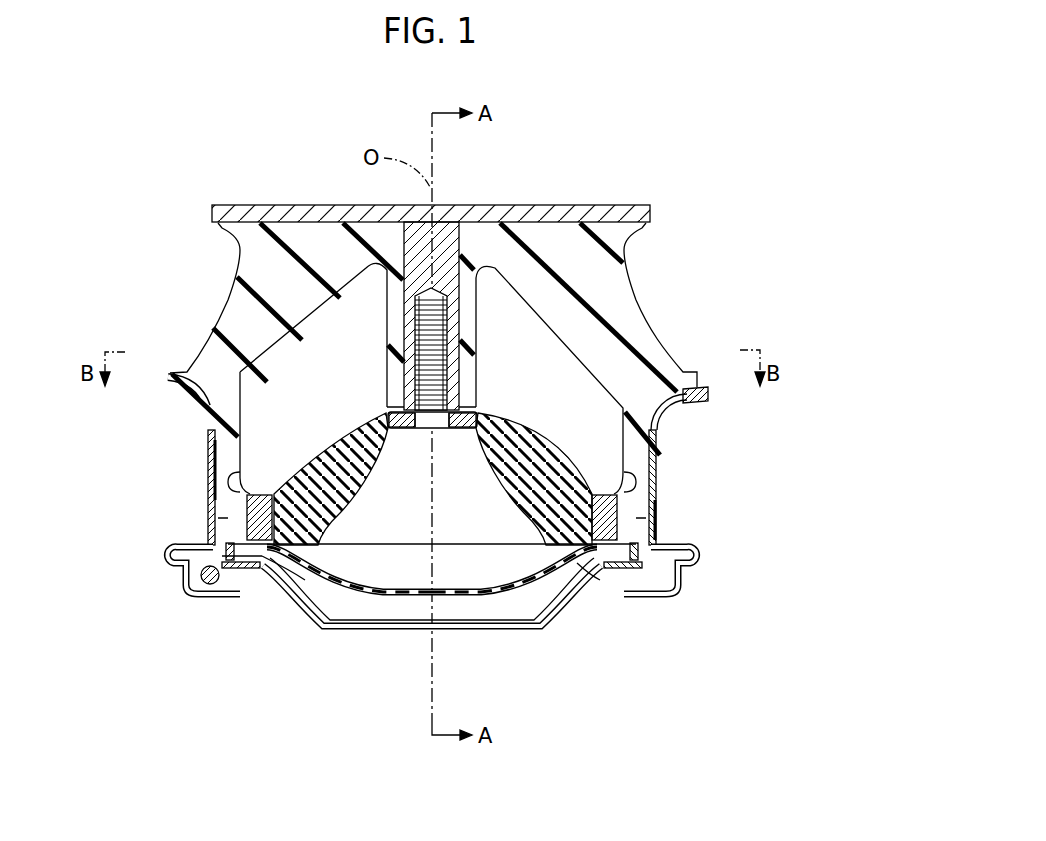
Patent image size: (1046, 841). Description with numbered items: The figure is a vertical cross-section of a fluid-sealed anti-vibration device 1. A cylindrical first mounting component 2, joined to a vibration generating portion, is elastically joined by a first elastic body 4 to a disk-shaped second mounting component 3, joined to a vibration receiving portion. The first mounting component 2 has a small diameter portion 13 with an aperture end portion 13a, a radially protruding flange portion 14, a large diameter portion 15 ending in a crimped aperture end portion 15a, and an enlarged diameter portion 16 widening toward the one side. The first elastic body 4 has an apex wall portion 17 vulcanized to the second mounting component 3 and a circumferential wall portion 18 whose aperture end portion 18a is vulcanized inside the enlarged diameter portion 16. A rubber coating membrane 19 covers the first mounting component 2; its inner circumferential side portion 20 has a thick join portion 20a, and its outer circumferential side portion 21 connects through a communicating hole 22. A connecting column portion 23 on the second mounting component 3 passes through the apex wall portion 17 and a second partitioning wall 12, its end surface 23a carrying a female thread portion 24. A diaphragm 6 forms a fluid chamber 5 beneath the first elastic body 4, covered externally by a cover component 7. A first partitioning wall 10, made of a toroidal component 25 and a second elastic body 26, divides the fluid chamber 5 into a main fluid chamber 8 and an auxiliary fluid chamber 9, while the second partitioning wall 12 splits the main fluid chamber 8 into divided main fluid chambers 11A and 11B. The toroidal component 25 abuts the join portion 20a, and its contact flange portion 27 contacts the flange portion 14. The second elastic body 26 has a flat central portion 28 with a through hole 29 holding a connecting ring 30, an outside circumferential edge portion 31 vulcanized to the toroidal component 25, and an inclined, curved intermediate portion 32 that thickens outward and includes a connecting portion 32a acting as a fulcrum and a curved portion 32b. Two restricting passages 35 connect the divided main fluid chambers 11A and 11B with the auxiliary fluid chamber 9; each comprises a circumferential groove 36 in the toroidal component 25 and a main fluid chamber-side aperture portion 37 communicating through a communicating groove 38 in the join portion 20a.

The anti-vibration device 1 is at (660, 74).
The first mounting component 2 is at (772, 400).
The second mounting component 3 is at (612, 205).
The first elastic body 4 is at (133, 222).
The fluid chamber 5 is at (387, 596).
The diaphragm 6 is at (447, 630).
The cover component 7 is at (522, 630).
The main fluid chamber 8 is at (552, 345).
The auxiliary fluid chamber 9 is at (403, 575).
The first partitioning wall 10 is at (262, 670).
The divided main fluid chamber 11A is at (288, 393).
The divided main fluid chamber 11B is at (491, 362).
The second partitioning wall 12 is at (467, 312).
The small diameter portion 13 is at (655, 468).
The aperture end portion 13a is at (656, 524).
The flange portion 14 is at (688, 540).
The large diameter portion 15 is at (690, 570).
The aperture end portion 15a is at (660, 594).
The enlarged diameter portion 16 is at (688, 411).
The apex wall portion 17 is at (237, 243).
The circumferential wall portion 18 is at (237, 310).
The aperture end portion 18a is at (193, 366).
The coating membrane 19 is at (133, 468).
The inner circumferential side portion 20 is at (212, 510).
The join portion 20a is at (228, 440).
The outer circumferential side portion 21 is at (205, 495).
The communicating hole 22 is at (660, 424).
The connecting column portion 23 is at (455, 265).
The end surface 23a is at (405, 418).
The female thread portion 24 is at (420, 330).
The toroidal component 25 is at (262, 548).
The second elastic body 26 is at (305, 552).
The contact flange portion 27 is at (212, 585).
The central portion 28 is at (470, 430).
The through hole 29 is at (410, 432).
The connecting ring 30 is at (398, 433).
The outside circumferential edge portion 31 is at (577, 565).
The intermediate portion 32 is at (505, 535).
The connecting portion 32a is at (495, 442).
The curved portion 32b is at (310, 467).
The restricting passage 35 is at (230, 520).
The circumferential groove 36 is at (232, 582).
The main fluid chamber-side aperture portion 37 is at (250, 493).
The communicating groove 38 is at (230, 482).